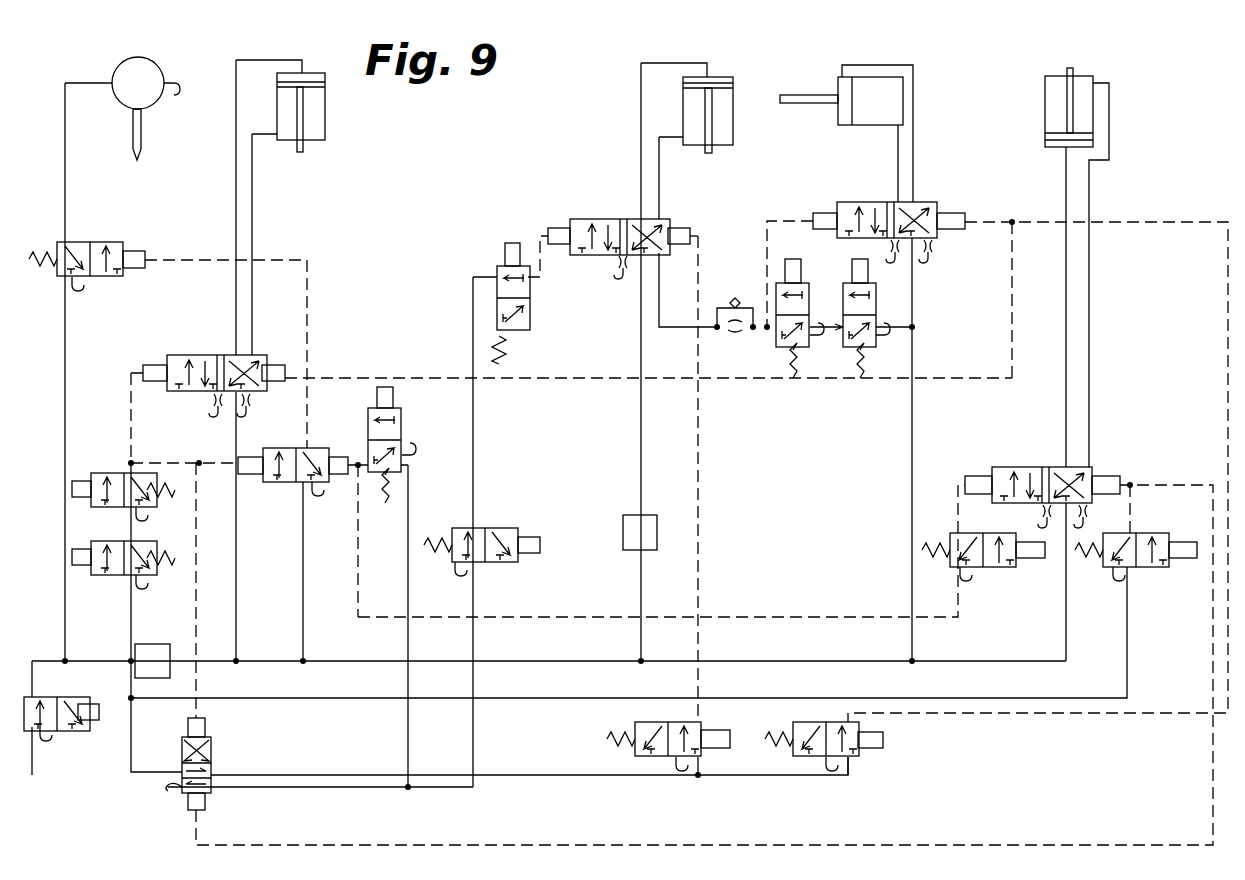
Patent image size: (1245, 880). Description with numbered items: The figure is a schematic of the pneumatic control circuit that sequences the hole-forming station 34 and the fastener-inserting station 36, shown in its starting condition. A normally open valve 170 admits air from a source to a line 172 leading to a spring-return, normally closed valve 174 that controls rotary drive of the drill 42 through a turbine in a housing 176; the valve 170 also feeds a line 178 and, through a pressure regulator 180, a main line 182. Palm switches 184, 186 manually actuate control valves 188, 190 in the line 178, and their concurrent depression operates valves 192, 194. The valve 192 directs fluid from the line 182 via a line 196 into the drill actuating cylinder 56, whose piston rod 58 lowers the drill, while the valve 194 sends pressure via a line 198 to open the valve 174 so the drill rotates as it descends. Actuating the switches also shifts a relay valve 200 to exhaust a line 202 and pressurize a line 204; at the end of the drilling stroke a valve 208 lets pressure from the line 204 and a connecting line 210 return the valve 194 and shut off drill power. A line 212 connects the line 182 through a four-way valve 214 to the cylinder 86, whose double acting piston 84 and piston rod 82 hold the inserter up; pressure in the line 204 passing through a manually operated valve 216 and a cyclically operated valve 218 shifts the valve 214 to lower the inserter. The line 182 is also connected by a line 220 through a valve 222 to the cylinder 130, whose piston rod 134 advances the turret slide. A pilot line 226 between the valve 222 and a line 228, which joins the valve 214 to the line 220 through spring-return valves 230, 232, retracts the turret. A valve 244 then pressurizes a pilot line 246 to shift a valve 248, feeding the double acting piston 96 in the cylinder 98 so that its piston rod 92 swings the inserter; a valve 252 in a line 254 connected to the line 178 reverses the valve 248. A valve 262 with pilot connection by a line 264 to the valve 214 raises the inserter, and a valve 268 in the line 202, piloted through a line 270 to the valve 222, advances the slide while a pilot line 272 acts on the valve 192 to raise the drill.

The housing 176 is at (160, 70).
The rotary cutting drill 42 is at (142, 148).
The line 172 is at (65, 360).
The spring-return normally-closed valve 174 is at (116, 242).
The drill actuating cylinder 56 is at (325, 118).
The piston rod 58 is at (303, 152).
The station 34 is at (382, 172).
The station 36 is at (563, 152).
The double acting piston 84 is at (713, 90).
The cylinder 86 is at (733, 137).
The piston rod 82 is at (712, 153).
The double acting piston rod 134 is at (800, 95).
The cylinder 130 is at (868, 125).
The valve 222 is at (938, 196).
The pilot line 226 is at (780, 210).
The piston rod 92 is at (1073, 70).
The cylinder 98 is at (1045, 112).
The double acting piston 96 is at (1060, 133).
The line 270 is at (1226, 333).
The valve 192 is at (222, 355).
The 4-way valve 214 is at (592, 253).
The cyclically operated valve 218 is at (528, 300).
The line 228 is at (662, 332).
The spring-return valve 230 is at (774, 340).
The spring-return valve 232 is at (875, 350).
The pilot line 272 is at (816, 380).
The palm switch 186 is at (79, 481).
The control valve 190 is at (97, 505).
The control valve 188 is at (95, 575).
The palm switch 184 is at (77, 565).
The line 178 is at (131, 605).
The pressure regulator 180 is at (152, 644).
The line 196 is at (236, 572).
The line 198 is at (303, 585).
The valve 194 is at (284, 448).
The valve 208 is at (402, 440).
The connecting line 210 is at (408, 610).
The manually operated normally open valve 216 is at (500, 560).
The line 212 is at (640, 470).
The line 264 is at (699, 578).
The line 220 is at (910, 492).
The valve 248 is at (1000, 460).
The valve 244 is at (978, 531).
The valve 252 is at (1130, 533).
The pilot line 246 is at (958, 620).
The line 254 is at (1127, 672).
The normally open valve 170 is at (72, 742).
The relay valve 200 is at (182, 757).
The line 202 is at (285, 775).
The line 204 is at (305, 790).
The main line 182 is at (262, 661).
The valve 262 is at (652, 722).
The valve 268 is at (800, 722).